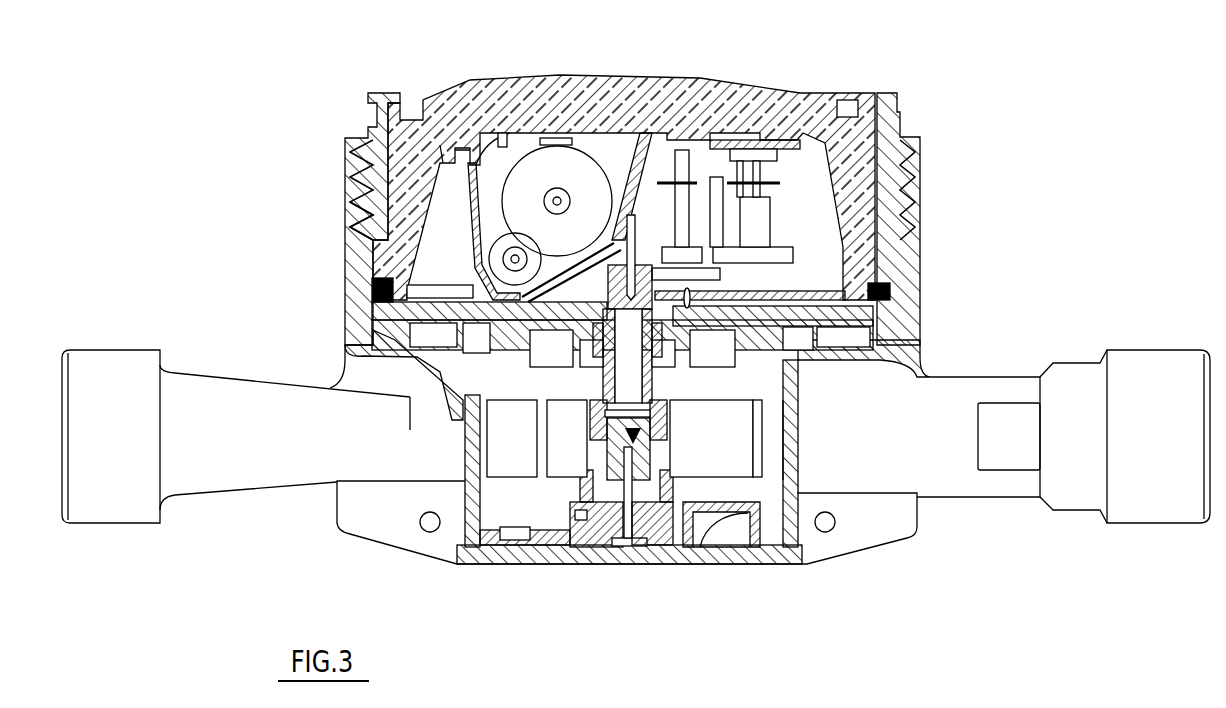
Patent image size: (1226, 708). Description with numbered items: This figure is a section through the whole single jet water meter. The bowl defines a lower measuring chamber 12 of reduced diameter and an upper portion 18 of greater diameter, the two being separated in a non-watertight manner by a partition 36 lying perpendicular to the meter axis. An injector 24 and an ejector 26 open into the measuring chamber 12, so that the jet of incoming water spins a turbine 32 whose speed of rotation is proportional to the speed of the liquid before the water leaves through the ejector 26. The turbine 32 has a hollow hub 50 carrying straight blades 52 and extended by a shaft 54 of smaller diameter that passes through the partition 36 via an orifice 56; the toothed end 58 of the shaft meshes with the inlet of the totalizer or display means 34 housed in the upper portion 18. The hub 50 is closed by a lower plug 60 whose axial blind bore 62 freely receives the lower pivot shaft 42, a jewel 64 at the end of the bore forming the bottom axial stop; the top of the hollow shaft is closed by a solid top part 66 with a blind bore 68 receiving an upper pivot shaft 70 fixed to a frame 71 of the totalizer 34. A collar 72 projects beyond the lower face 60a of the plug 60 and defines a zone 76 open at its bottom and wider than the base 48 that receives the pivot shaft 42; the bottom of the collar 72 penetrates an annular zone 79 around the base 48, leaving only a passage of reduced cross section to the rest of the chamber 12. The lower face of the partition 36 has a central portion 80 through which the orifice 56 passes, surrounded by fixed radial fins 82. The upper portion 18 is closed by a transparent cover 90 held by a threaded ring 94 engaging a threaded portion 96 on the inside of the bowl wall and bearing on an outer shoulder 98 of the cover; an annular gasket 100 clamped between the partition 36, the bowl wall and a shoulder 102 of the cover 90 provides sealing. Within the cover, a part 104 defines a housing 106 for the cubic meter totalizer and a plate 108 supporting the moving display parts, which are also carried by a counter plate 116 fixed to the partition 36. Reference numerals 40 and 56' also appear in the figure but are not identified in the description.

The lower cylindrical portion (measuring chamber) 12 is at (453, 567).
The upper portion (display chamber) 18 is at (827, 253).
The injector 24 is at (233, 400).
The ejector 26 is at (995, 487).
The turbine 32 is at (745, 485).
The display means (totalizer) 34 is at (782, 225).
The partition wall 36 is at (370, 327).
The curved surface 40 is at (693, 560).
The lower pivot shaft 42 is at (553, 547).
The base 48 is at (607, 560).
The hub 50 is at (585, 423).
The straight blades 52 is at (510, 413).
The shaft 54 is at (652, 384).
The orifice 56 is at (582, 360).
The bearing block 56' is at (693, 357).
The toothed end of the shaft 58 is at (607, 247).
The lower plug 60 is at (668, 455).
The lower face of the plug 60a is at (640, 550).
The axial blind bore 62 is at (600, 457).
The jewel 64 is at (670, 423).
The solid top part 66 is at (613, 293).
The blind axial bore 68 is at (633, 293).
The upper pivot shaft 70 is at (640, 248).
The frame 71 is at (643, 133).
The collar 72 is at (517, 550).
The zone 76 is at (680, 548).
The annular zone 79 is at (743, 550).
The central portion 80 is at (541, 353).
The fixed radial fins 82 is at (701, 355).
The transparent cover 90 is at (453, 112).
The threaded ring 94 is at (378, 92).
The threaded portion 96 is at (360, 172).
The outer shoulder 98 is at (363, 225).
The annular gasket 100 is at (370, 287).
The shoulder 102 is at (890, 297).
The part 104 is at (507, 137).
The housing 106 is at (603, 150).
The plate 108 is at (720, 140).
The counter plate 116 is at (850, 270).